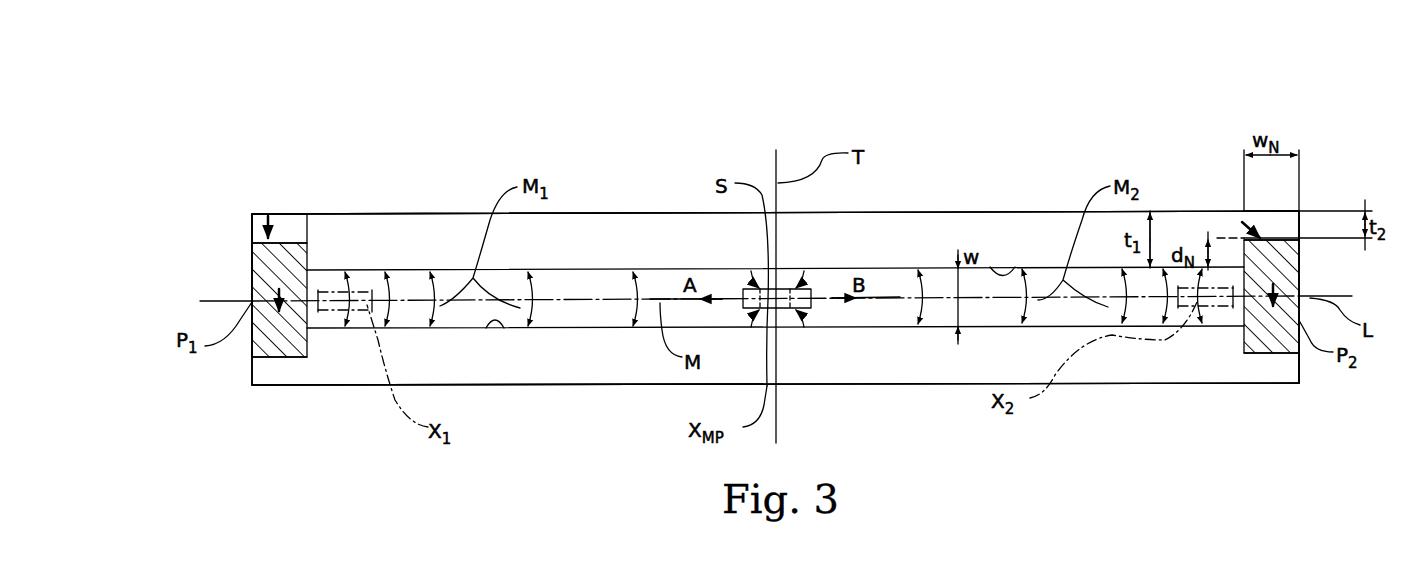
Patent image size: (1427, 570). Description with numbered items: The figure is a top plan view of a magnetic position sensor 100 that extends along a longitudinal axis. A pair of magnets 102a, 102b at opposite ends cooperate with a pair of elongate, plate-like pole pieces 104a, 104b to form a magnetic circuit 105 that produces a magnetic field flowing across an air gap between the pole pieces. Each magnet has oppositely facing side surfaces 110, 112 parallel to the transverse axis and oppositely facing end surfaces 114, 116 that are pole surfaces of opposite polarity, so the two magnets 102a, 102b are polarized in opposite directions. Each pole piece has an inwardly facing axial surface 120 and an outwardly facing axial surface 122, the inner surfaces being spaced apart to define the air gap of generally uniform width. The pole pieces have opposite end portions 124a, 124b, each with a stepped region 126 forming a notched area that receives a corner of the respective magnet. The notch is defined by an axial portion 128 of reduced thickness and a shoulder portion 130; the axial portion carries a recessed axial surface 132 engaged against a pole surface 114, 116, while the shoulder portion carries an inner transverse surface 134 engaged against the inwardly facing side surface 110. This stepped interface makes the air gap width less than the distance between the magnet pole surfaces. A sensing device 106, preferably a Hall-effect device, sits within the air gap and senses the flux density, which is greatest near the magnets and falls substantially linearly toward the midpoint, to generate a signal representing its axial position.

The magnetic position sensor 100 is at (430, 105).
The magnet 102a is at (250, 279).
The magnet 102b is at (1302, 272).
The elongate pole piece 104a is at (852, 210).
The elongate pole piece 104b is at (680, 388).
The magnetic circuit 105 is at (682, 200).
The sensing device 106 is at (806, 310).
The side surface 110 is at (303, 362).
The side surface 112 is at (253, 343).
The end surface 114 is at (285, 243).
The end surface 116 is at (283, 358).
The inwardly facing axial surface 120 is at (495, 328).
The outwardly facing axial surface 122 is at (570, 386).
The end portion 124a is at (278, 175).
The end portion 124b is at (1270, 200).
The stepped region 126 is at (268, 214).
The axial portion 128 is at (252, 231).
The shoulder portion 130 is at (330, 257).
The recessed axial surface 132 is at (262, 250).
The inner transverse surface 134 is at (307, 243).